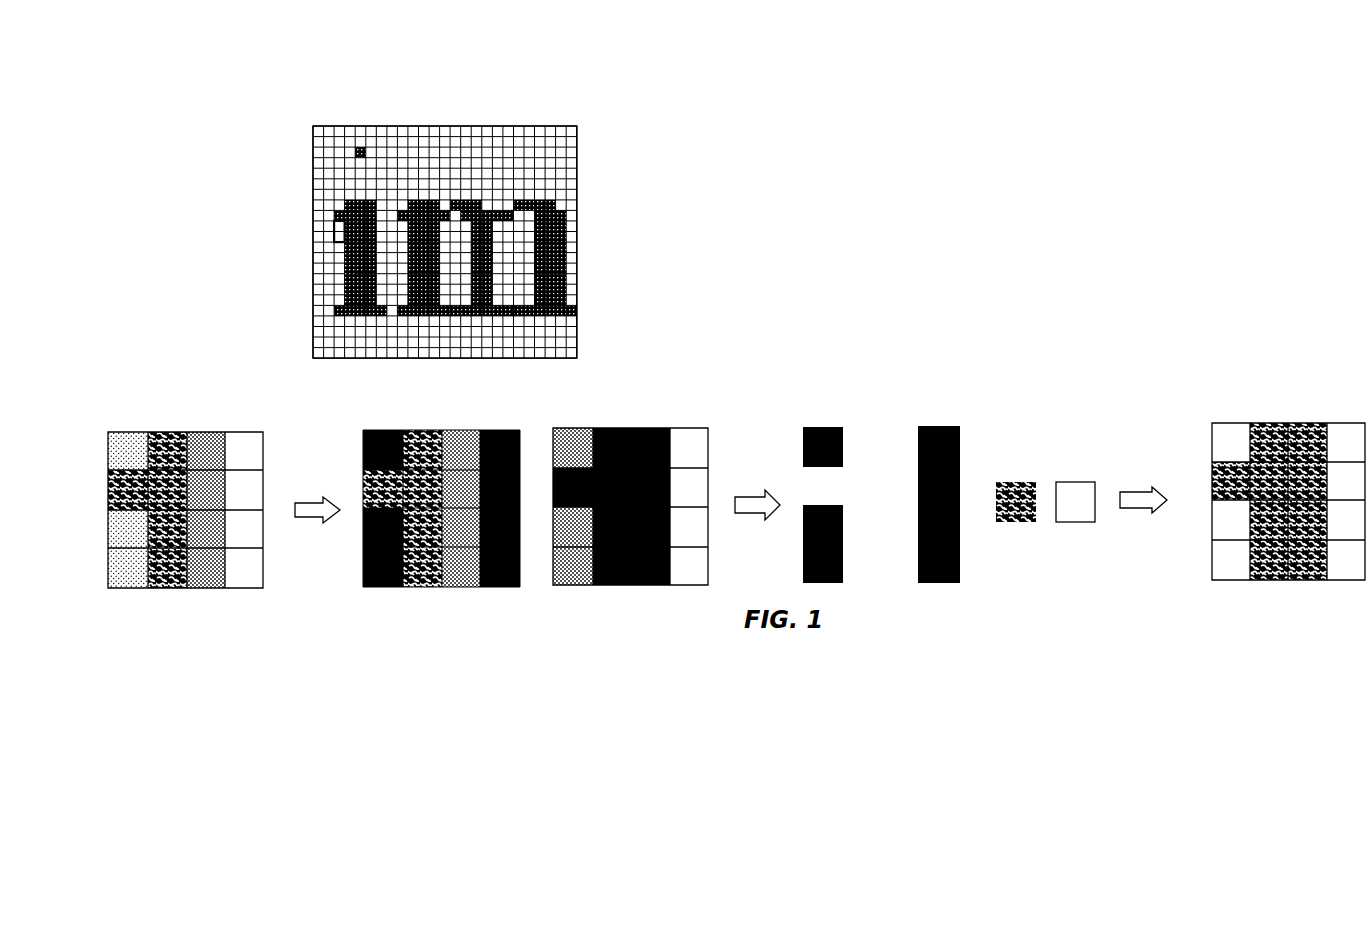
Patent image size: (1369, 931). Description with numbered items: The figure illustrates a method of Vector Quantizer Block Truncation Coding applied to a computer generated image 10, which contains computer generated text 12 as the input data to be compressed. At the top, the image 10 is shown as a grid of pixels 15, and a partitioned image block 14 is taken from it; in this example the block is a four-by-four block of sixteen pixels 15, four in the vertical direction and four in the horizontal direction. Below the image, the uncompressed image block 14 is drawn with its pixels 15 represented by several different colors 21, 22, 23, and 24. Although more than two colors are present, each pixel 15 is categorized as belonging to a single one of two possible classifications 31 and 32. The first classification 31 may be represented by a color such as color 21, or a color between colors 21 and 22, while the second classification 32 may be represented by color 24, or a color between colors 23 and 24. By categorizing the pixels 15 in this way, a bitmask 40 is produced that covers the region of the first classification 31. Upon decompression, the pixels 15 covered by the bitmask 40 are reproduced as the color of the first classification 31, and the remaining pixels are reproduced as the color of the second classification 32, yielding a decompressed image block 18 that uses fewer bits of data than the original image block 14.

The computer generated image 10 is at (362, 86).
The computer generated text 12 is at (348, 267).
The partitioned image block 14 is at (223, 389).
The pixels 15 is at (336, 238).
The decompressed image block 18 is at (1203, 402).
The color 21 is at (167, 434).
The color 22 is at (214, 477).
The color 23 is at (128, 434).
The color 24 is at (248, 491).
The first classification 31 is at (628, 438).
The second classification 32 is at (383, 441).
The bitmask 40 is at (866, 402).